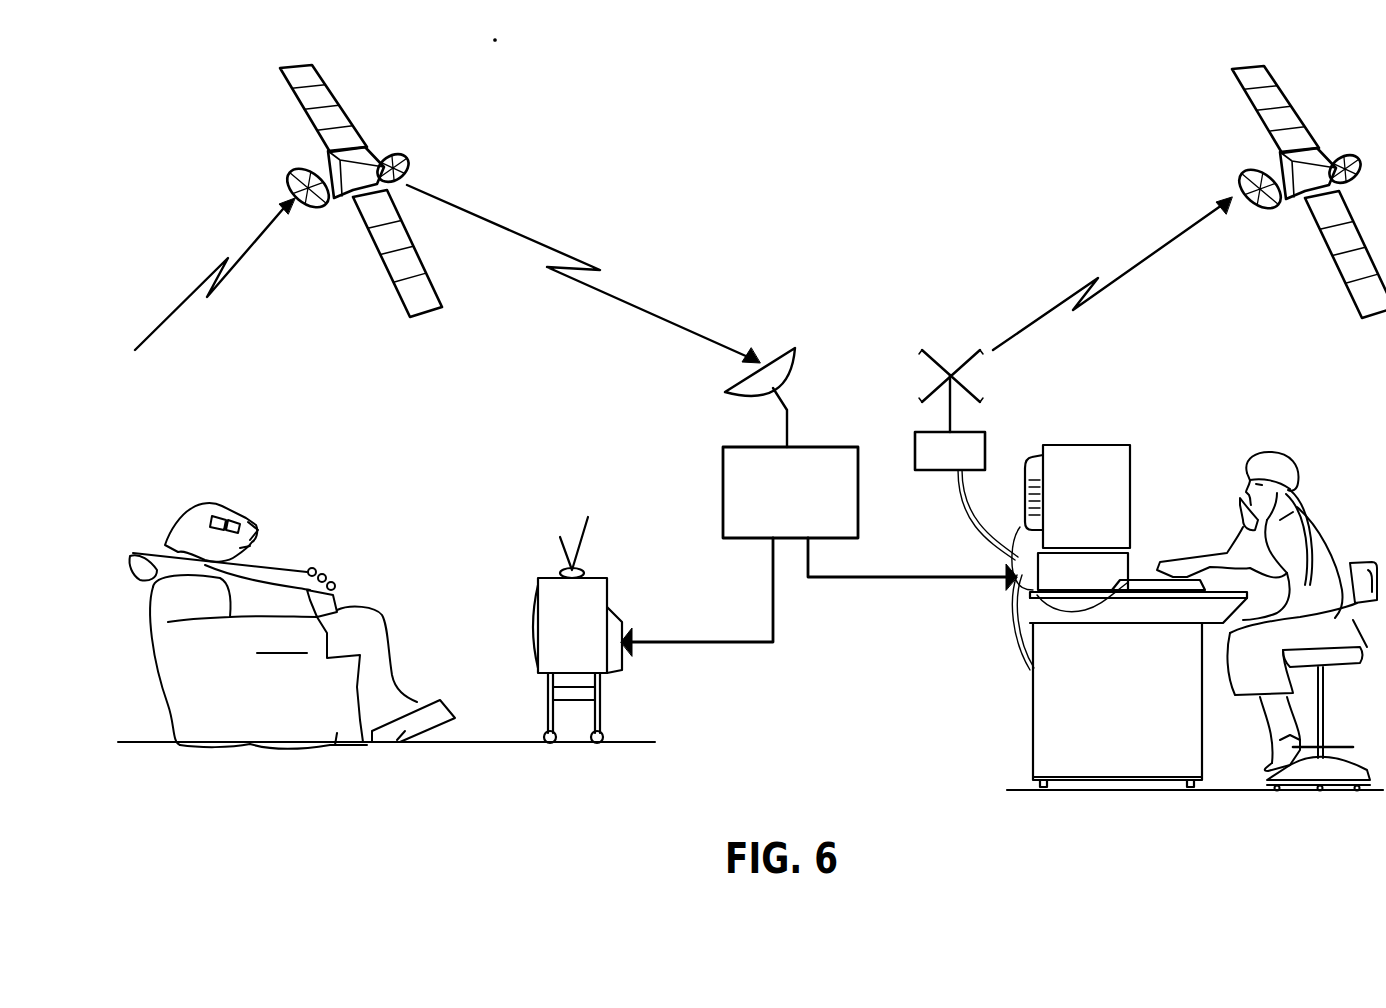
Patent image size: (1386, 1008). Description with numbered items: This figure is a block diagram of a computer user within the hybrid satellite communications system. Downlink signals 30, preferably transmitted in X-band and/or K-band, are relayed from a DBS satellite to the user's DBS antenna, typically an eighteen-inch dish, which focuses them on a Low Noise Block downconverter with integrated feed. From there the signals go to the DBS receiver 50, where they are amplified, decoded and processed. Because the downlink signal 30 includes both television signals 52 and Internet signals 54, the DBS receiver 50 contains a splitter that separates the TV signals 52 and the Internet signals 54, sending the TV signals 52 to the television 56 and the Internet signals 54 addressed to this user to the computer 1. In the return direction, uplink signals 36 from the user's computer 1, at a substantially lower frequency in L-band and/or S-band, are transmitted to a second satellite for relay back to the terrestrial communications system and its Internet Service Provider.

The user's computer 1 is at (1097, 443).
The downlink signals 30 is at (565, 250).
The uplink signals 36 is at (1098, 278).
The DBS receiver 50 is at (722, 482).
The TV signals 52 is at (712, 640).
The Internet signals 54 is at (923, 575).
The television 56 is at (545, 577).